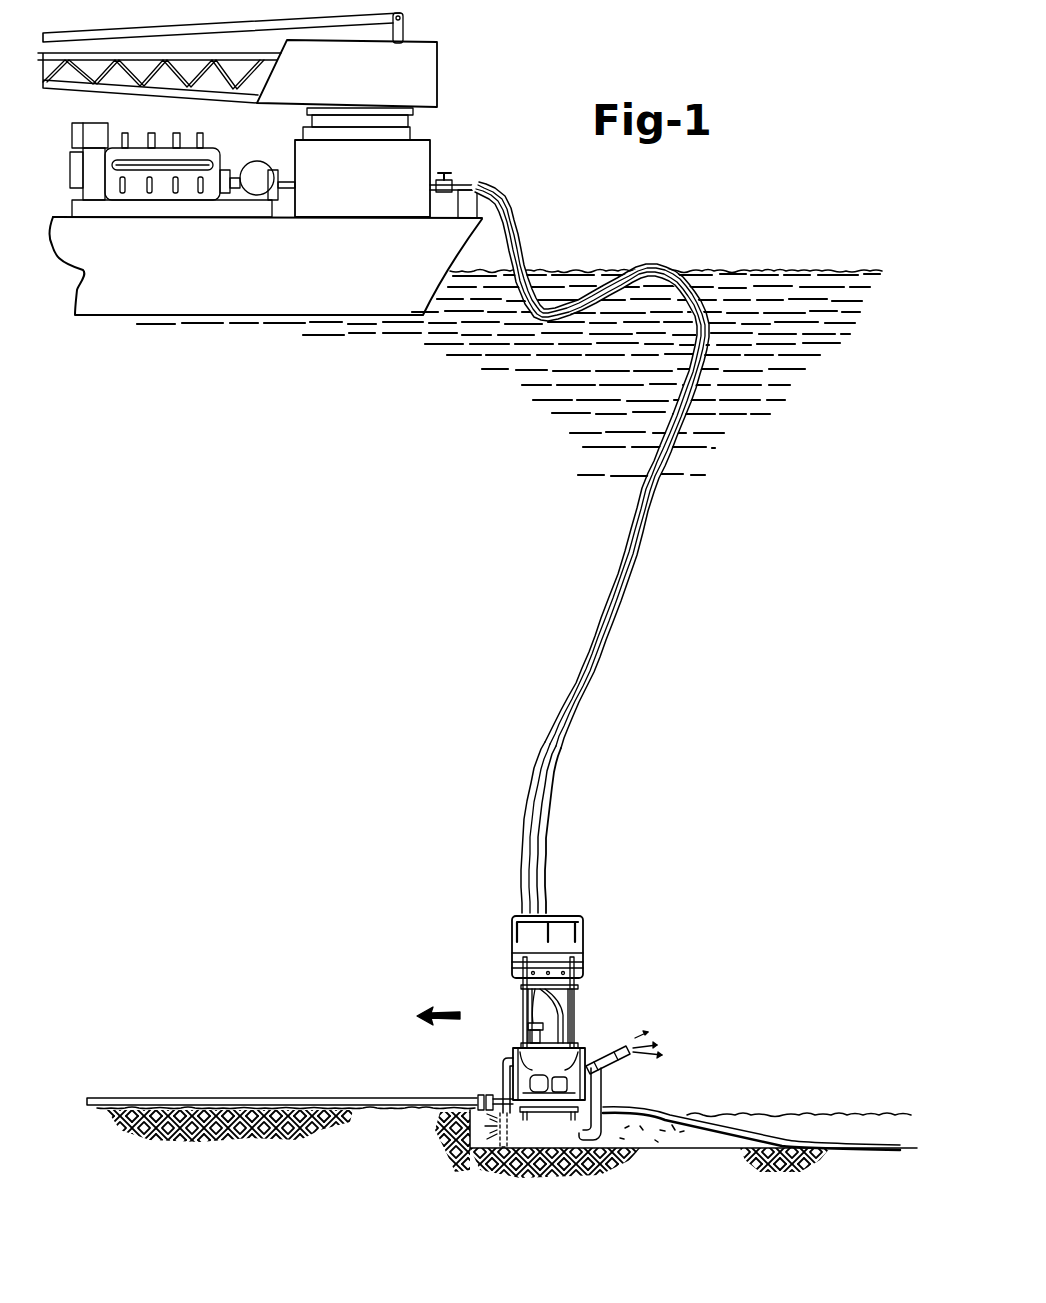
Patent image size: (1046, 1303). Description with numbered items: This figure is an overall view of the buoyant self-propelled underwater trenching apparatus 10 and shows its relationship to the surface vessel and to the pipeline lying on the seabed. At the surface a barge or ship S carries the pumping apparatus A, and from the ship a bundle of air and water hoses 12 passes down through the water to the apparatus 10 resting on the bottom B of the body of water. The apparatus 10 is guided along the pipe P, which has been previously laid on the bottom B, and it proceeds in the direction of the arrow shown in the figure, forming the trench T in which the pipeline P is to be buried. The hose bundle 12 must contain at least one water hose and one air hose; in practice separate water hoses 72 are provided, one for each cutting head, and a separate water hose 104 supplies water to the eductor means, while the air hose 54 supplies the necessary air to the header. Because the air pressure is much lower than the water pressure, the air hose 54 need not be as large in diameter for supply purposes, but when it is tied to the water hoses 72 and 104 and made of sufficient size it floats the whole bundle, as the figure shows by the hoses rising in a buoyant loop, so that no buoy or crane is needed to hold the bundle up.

The buoyant underwater self-propelled trenching apparatus 10 is at (607, 941).
The air and water hoses 12 is at (637, 557).
The air hose 54 is at (550, 787).
The water hoses 72 is at (522, 887).
The water hose 104 is at (535, 801).
The pumping apparatus A is at (168, 133).
The barge or ship S is at (105, 307).
The pipe or pipeline P is at (248, 1100).
The bottom of the body of water B is at (128, 1135).
The trench T is at (663, 1138).